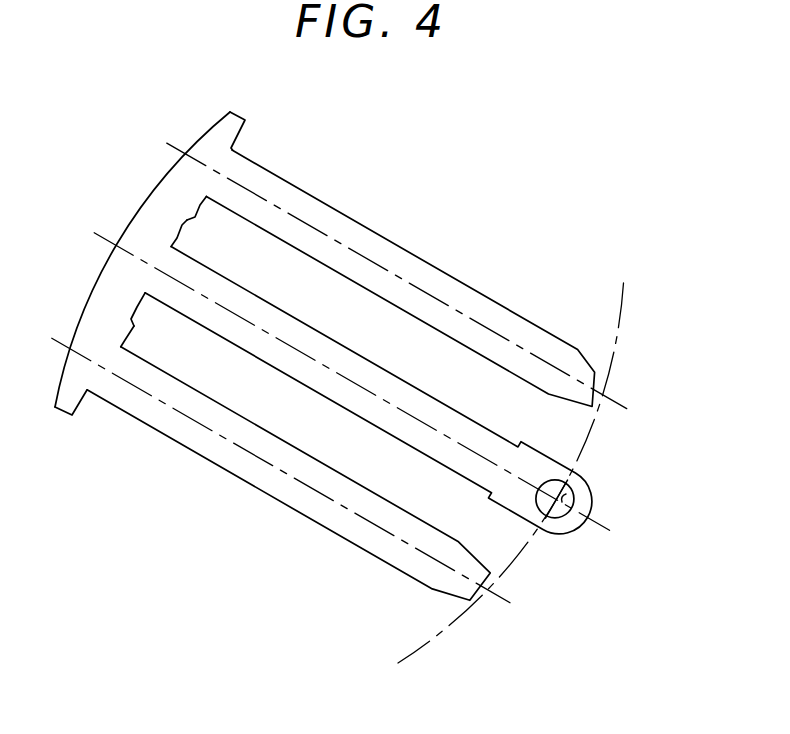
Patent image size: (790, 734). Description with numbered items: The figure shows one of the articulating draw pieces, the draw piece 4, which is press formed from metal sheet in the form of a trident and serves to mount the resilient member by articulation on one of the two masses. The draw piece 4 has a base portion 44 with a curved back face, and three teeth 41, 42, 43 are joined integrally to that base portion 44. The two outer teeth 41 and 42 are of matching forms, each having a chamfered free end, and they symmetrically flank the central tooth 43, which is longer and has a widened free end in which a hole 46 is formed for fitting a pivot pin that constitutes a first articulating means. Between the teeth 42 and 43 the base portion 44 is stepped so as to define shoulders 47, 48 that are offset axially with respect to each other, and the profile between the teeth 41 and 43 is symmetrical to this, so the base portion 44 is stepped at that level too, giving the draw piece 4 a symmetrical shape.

The draw piece 4 is at (295, 522).
The tooth 41 is at (465, 285).
The tooth 42 is at (363, 550).
The central tooth 43 is at (575, 472).
The base portion 44 is at (138, 215).
The hole 46 is at (573, 490).
The shoulder 47 is at (207, 197).
The shoulder 48 is at (183, 233).